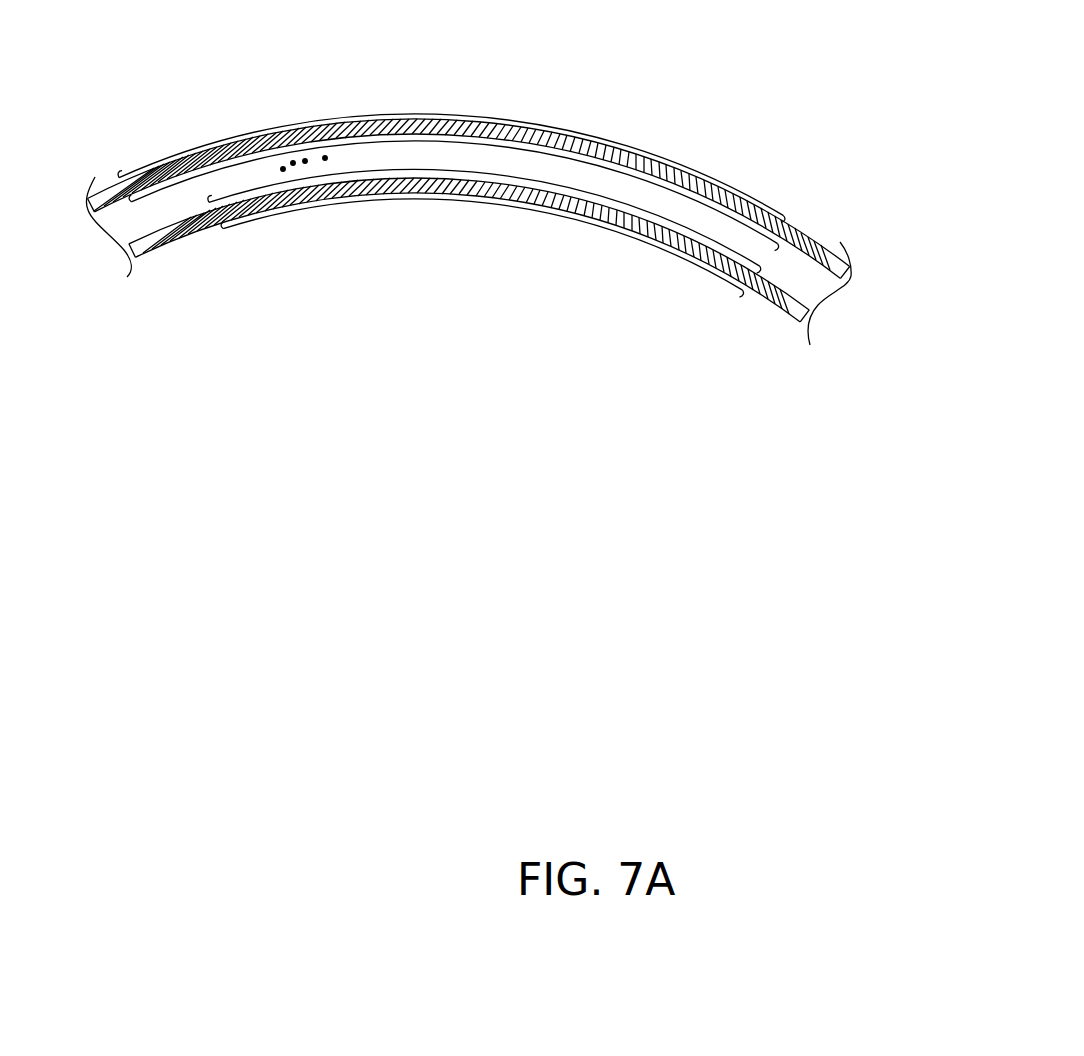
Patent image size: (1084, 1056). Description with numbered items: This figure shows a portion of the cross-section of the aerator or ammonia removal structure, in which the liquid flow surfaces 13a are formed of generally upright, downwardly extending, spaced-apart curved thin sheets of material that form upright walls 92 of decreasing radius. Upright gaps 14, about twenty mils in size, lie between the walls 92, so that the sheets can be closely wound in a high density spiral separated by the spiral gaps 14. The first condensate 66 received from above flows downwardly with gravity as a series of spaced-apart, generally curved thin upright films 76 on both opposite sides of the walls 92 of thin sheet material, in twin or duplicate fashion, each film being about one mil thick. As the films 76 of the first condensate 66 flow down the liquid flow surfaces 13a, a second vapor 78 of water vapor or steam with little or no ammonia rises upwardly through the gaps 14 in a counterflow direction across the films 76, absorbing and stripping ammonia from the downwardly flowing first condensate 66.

The liquid flow surfaces 13a is at (870, 66).
The gaps 14 is at (154, 213).
The first condensate 66 is at (469, 198).
The films 76 is at (469, 198).
The second vapor 78 is at (306, 166).
The upright walls 92 is at (807, 238).